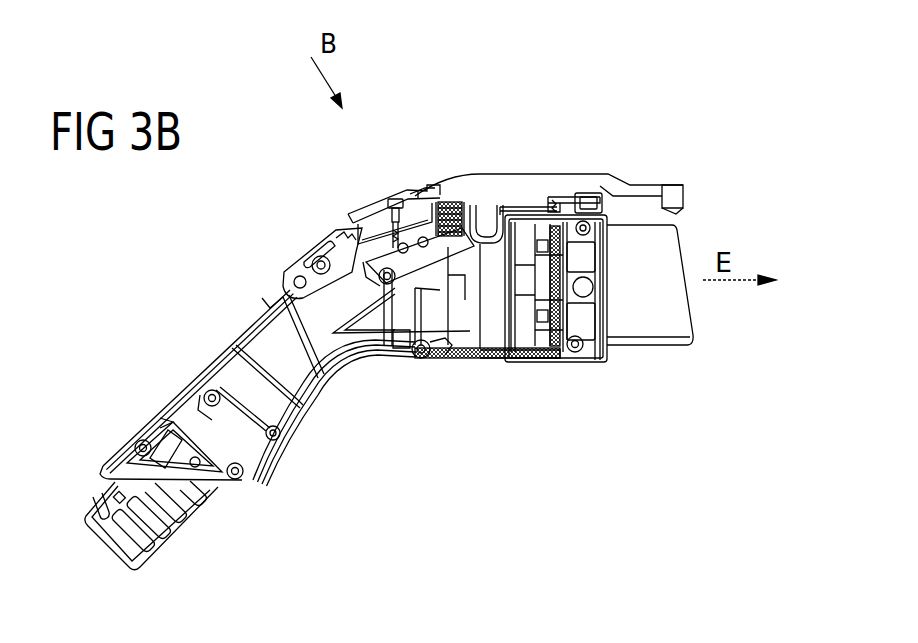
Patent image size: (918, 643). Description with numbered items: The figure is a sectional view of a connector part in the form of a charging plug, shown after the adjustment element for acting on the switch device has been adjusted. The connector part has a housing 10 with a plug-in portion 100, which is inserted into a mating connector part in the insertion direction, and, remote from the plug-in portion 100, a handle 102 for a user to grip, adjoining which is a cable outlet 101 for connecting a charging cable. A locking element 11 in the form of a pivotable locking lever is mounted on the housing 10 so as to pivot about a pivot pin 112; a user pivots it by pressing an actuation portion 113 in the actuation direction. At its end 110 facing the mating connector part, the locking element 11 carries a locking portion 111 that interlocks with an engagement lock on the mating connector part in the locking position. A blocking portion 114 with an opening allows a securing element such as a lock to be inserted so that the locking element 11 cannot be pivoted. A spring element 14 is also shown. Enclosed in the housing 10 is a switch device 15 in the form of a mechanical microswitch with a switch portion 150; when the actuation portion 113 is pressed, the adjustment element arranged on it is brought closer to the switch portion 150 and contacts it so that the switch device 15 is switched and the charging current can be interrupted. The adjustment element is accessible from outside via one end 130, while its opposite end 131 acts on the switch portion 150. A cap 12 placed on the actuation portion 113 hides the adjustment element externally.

The housing 10 is at (530, 360).
The locking element 11 is at (626, 172).
The cap 12 is at (356, 192).
The spring element 14 is at (455, 200).
The switch device 15 is at (418, 252).
The plug-in portion 100 is at (655, 332).
The cable outlet 101 is at (178, 522).
The handle 102 is at (222, 348).
The end 110 is at (663, 190).
The locking portion 111 is at (680, 207).
The pivot pin 112 is at (492, 218).
The actuation portion 113 is at (420, 188).
The blocking portion 114 is at (295, 270).
The end 130 is at (396, 198).
The end 131 is at (382, 192).
The switch portion 150 is at (397, 338).